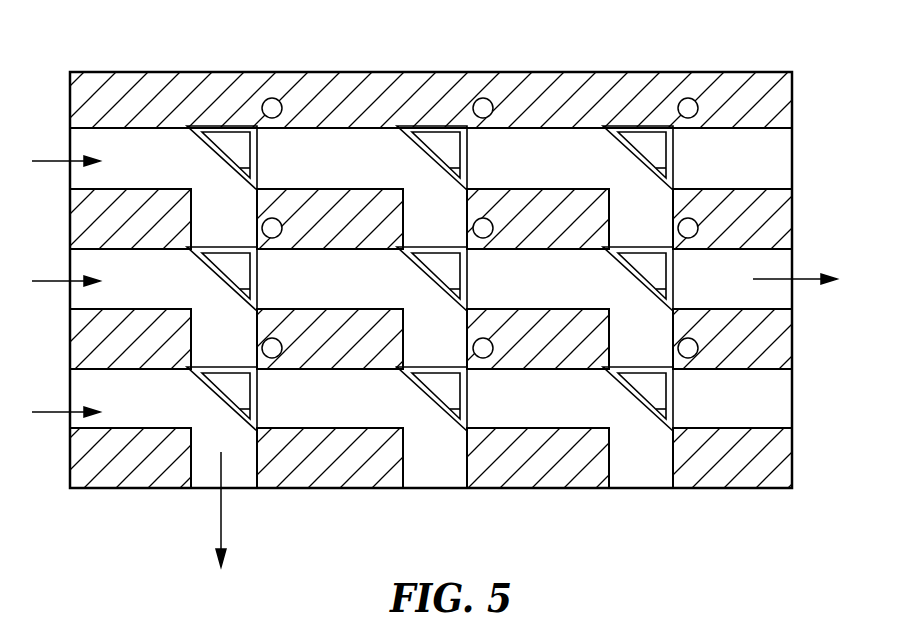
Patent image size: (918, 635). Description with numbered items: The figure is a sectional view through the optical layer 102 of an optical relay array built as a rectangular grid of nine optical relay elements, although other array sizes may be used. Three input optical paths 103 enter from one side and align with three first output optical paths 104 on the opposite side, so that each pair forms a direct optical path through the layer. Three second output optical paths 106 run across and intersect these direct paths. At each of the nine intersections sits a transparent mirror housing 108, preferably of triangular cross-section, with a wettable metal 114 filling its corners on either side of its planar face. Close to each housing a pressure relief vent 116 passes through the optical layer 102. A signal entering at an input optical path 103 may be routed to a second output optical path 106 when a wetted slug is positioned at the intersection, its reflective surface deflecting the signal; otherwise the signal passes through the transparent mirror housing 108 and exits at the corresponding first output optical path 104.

The optical layer 102 is at (792, 92).
The input optical paths 103 is at (80, 145).
The first output optical paths 104 is at (780, 161).
The second output optical paths 106 is at (240, 473).
The transparent mirror housing 108 is at (478, 118).
The wettable metal 114 is at (213, 128).
The pressure relief vent 116 is at (272, 107).